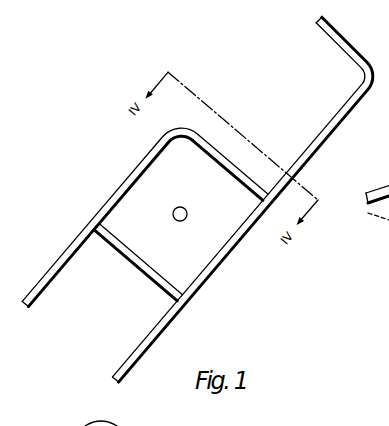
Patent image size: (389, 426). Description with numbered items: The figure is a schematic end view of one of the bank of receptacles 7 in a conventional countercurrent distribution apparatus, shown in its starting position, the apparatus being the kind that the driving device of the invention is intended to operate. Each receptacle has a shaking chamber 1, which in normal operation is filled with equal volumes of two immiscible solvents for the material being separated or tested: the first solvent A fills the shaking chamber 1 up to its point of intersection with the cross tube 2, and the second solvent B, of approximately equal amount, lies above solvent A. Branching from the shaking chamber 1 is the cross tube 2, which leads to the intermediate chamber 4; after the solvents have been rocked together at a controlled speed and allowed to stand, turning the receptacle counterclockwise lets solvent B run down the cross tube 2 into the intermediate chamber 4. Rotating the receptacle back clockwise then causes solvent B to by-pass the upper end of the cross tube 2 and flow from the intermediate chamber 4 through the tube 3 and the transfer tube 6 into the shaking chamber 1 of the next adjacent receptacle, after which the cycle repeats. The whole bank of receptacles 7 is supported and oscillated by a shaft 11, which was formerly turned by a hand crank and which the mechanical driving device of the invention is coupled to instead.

The shaking chamber 1 is at (208, 277).
The cross tube 2 is at (144, 268).
The tube 3 is at (110, 203).
The intermediate chamber 4 is at (60, 265).
The transfer tube 6 is at (234, 164).
The bank of receptacles 7 is at (308, 168).
The shaft 11 is at (177, 207).
The first solvent A is at (158, 352).
The second solvent B is at (206, 304).